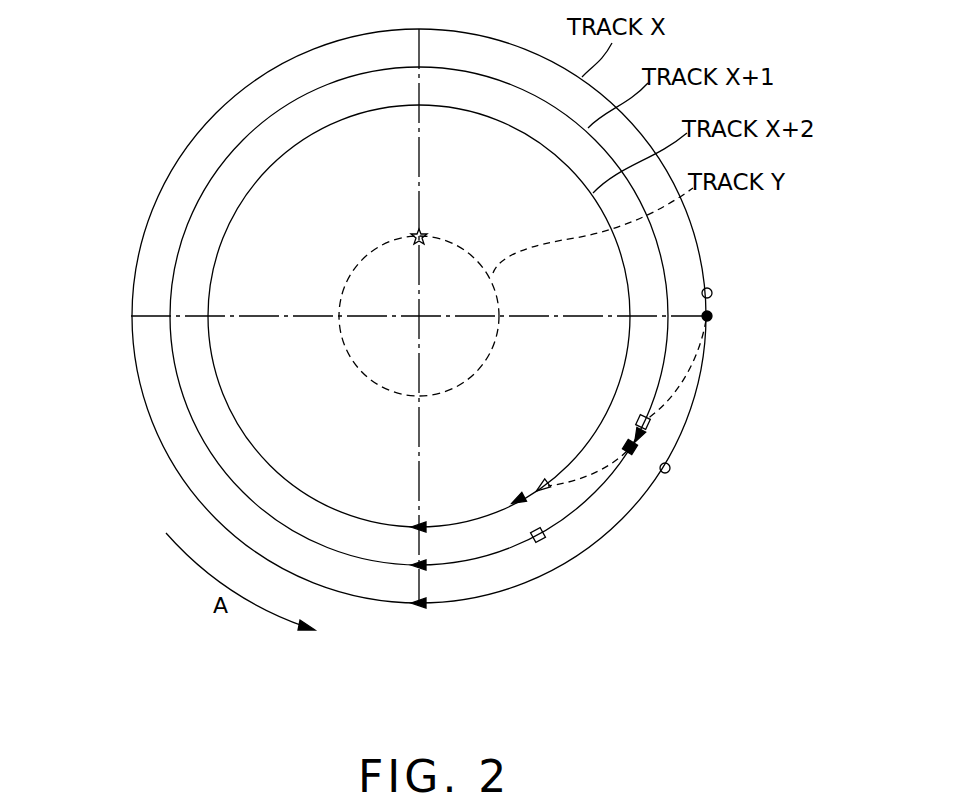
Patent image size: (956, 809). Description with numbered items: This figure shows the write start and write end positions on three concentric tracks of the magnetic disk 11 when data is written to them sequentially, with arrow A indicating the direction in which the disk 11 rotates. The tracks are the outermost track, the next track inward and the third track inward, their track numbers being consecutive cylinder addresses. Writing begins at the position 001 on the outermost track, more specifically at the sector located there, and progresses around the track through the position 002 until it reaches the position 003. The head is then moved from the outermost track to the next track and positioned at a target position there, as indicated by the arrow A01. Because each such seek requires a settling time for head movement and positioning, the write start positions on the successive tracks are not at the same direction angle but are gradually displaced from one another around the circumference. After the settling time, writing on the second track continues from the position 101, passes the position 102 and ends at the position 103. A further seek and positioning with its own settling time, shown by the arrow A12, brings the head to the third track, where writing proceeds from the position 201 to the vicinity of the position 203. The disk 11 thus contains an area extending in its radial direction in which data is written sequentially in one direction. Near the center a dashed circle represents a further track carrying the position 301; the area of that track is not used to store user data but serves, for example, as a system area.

The disk 11 is at (143, 449).
The position on track Y 301 is at (425, 236).
The write end position on track X 003 is at (712, 292).
The write start position on track X 001 is at (713, 316).
The arrow showing head movement from track X to track X+1 A01 is at (690, 357).
The write end position on track X+1 103 is at (650, 426).
The write start position on track X+1 101 is at (633, 452).
The intermediate position on track X 002 is at (670, 470).
The arrow showing head movement from track X+1 to track X+2 A12 is at (584, 463).
The write end position on track X+2 203 is at (546, 491).
The write start position on track X+2 201 is at (517, 507).
The intermediate position on track X+1 102 is at (537, 541).